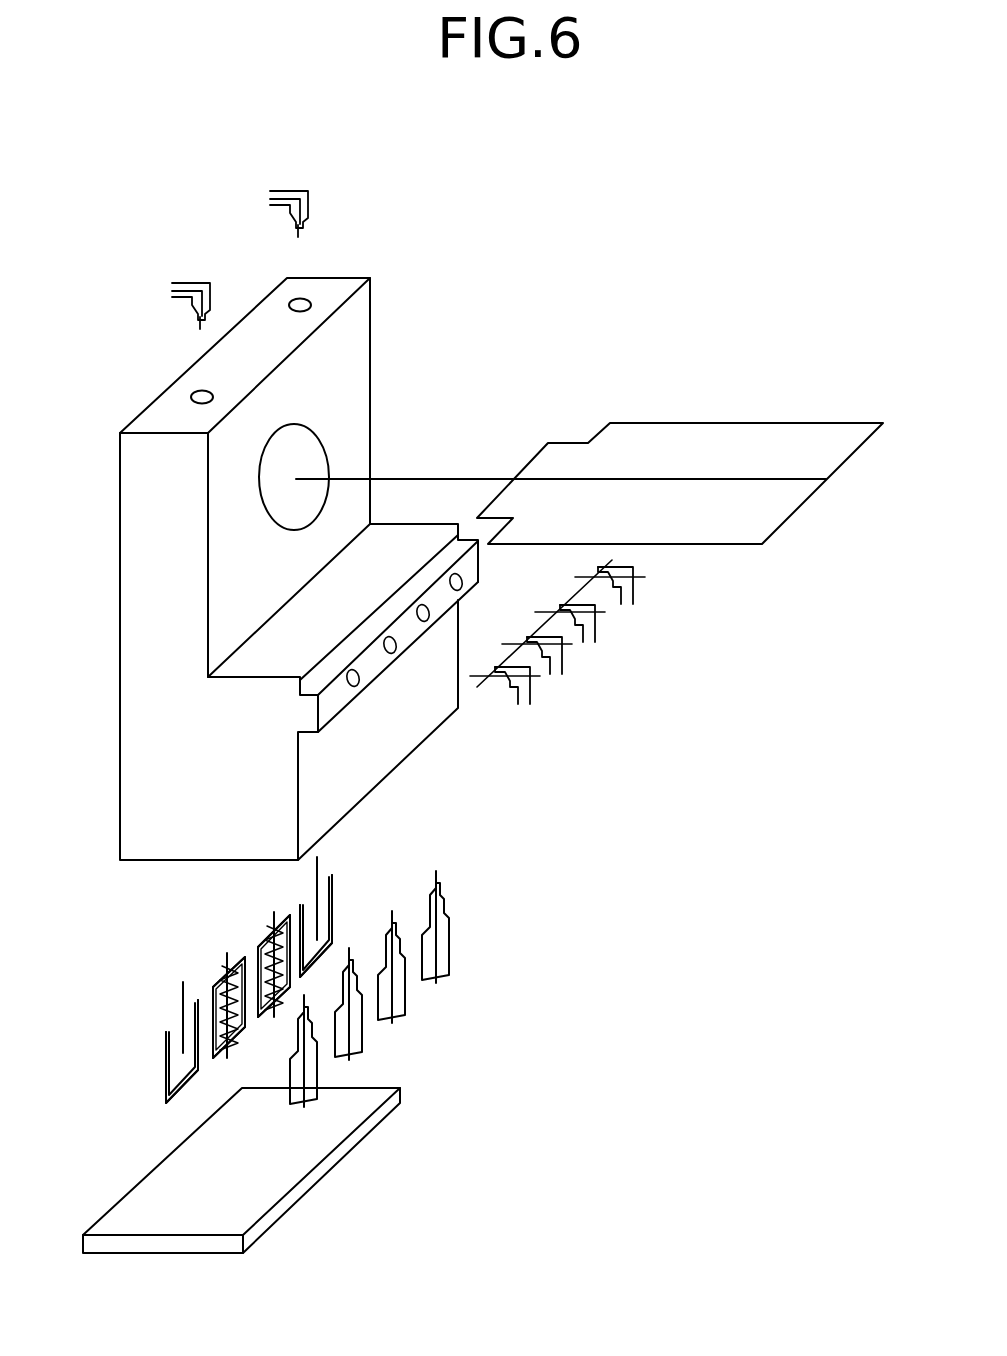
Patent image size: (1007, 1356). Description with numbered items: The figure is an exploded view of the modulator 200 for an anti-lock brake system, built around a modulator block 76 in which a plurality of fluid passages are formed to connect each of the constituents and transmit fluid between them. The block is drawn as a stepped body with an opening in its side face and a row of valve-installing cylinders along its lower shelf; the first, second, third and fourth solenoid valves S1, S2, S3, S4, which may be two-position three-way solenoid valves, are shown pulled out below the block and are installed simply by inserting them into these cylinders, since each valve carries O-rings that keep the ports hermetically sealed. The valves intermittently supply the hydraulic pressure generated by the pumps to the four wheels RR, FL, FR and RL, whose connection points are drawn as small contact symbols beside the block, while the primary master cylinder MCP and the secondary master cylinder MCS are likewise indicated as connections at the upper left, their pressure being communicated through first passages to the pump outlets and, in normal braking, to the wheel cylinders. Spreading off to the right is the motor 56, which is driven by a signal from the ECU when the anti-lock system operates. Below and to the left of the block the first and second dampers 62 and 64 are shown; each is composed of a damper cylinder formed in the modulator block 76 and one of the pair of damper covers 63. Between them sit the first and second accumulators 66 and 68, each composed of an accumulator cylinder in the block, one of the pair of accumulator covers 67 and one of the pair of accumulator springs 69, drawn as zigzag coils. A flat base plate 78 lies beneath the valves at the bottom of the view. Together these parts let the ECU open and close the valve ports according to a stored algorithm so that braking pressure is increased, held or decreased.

The modulator 200 is at (628, 196).
The modulator block 76 is at (142, 678).
The motor 56 is at (707, 433).
The base plate 78 is at (350, 1153).
The first damper 62 is at (158, 1022).
The damper covers 63 is at (165, 1083).
The second damper 64 is at (336, 858).
The first accumulator 66 is at (215, 969).
The accumulator covers 67 is at (262, 935).
The second accumulator 68 is at (258, 927).
The accumulator springs 69 is at (267, 1020).
The first solenoid valve S1 is at (315, 1078).
The second solenoid valve S2 is at (360, 1038).
The third solenoid valve S3 is at (402, 997).
The fourth solenoid valve S4 is at (445, 958).
The secondary master cylinder MCS is at (270, 199).
The primary master cylinder MCP is at (172, 292).
The rear right wheel RR is at (514, 709).
The front left wheel FL is at (550, 678).
The front right wheel FR is at (585, 645).
The rear left wheel RL is at (625, 607).